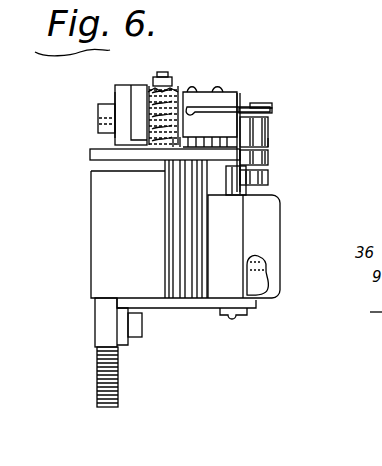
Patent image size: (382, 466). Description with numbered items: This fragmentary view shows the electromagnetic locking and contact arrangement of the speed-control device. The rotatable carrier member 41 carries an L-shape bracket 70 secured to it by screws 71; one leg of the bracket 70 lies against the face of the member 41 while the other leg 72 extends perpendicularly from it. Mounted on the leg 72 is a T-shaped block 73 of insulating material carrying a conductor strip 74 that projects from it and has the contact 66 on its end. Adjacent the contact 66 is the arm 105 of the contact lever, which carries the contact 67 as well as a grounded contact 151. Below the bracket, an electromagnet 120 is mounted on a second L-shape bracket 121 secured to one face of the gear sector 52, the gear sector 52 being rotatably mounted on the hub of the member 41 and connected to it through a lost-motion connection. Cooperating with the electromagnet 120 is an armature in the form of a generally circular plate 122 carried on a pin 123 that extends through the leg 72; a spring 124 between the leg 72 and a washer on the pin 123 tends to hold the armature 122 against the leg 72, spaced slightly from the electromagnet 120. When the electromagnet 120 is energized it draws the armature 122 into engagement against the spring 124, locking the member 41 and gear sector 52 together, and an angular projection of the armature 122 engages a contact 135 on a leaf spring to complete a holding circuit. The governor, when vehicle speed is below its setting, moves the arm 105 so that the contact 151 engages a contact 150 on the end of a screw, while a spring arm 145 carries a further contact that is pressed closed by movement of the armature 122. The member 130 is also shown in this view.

The L-shape bracket 70 is at (138, 86).
The screws 71 is at (98, 122).
The rotatable carrier member 41 is at (118, 98).
The pin 123 is at (163, 77).
The T-shaped block 73 is at (200, 92).
The conductor strip 74 is at (218, 108).
The leg 72 is at (215, 138).
The contact 66 is at (272, 106).
The contact 67 is at (272, 112).
The arm 105 is at (268, 130).
The contact 151 is at (268, 145).
The contact 150 is at (268, 155).
The member 130 is at (230, 170).
The spring arm 145 is at (268, 180).
The armature 122 is at (90, 155).
The spring 124 is at (140, 150).
The electromagnet 120 is at (100, 243).
The contact 135 is at (235, 166).
The L-shape bracket 121 is at (188, 302).
The gear sector 52 is at (97, 370).